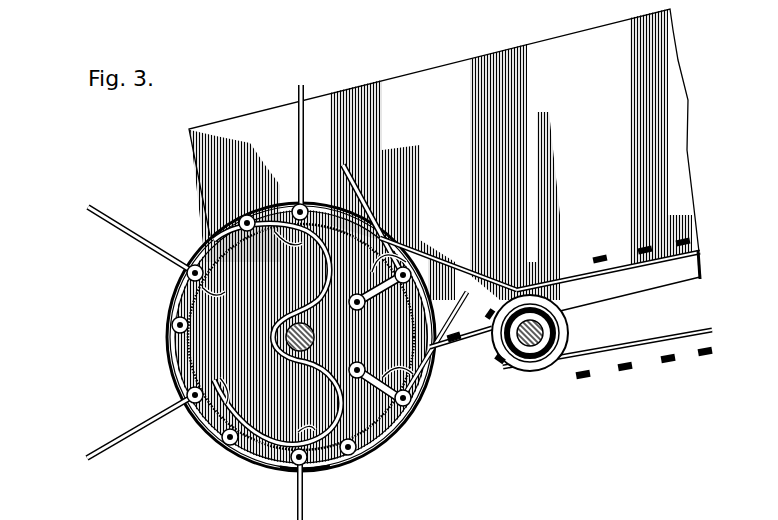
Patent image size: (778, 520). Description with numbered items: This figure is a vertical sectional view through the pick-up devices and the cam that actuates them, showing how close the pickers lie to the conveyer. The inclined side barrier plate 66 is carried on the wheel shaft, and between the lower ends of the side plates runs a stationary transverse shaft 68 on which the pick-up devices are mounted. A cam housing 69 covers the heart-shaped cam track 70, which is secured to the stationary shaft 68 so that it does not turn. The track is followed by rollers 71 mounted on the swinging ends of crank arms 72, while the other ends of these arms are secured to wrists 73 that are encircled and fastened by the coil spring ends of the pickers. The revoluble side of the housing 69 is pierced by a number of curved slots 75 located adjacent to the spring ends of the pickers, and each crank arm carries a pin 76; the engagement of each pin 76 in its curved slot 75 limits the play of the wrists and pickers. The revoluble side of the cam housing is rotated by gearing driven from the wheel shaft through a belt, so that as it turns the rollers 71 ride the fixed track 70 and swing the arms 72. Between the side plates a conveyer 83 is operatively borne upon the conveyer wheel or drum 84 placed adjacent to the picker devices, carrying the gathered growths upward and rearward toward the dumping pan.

The side barrier plate 66 is at (394, 90).
The stationary transverse shaft 68 is at (397, 435).
The cam housing 69 is at (405, 418).
The heart-shaped cam track 70 is at (166, 362).
The roller 71 is at (370, 455).
The crank arm 72 is at (325, 477).
The wrist 73 is at (289, 472).
The curved slot 75 is at (418, 384).
The pin 76 is at (413, 398).
The conveyer 83 is at (642, 351).
The conveyer wheel or drum 84 is at (538, 355).